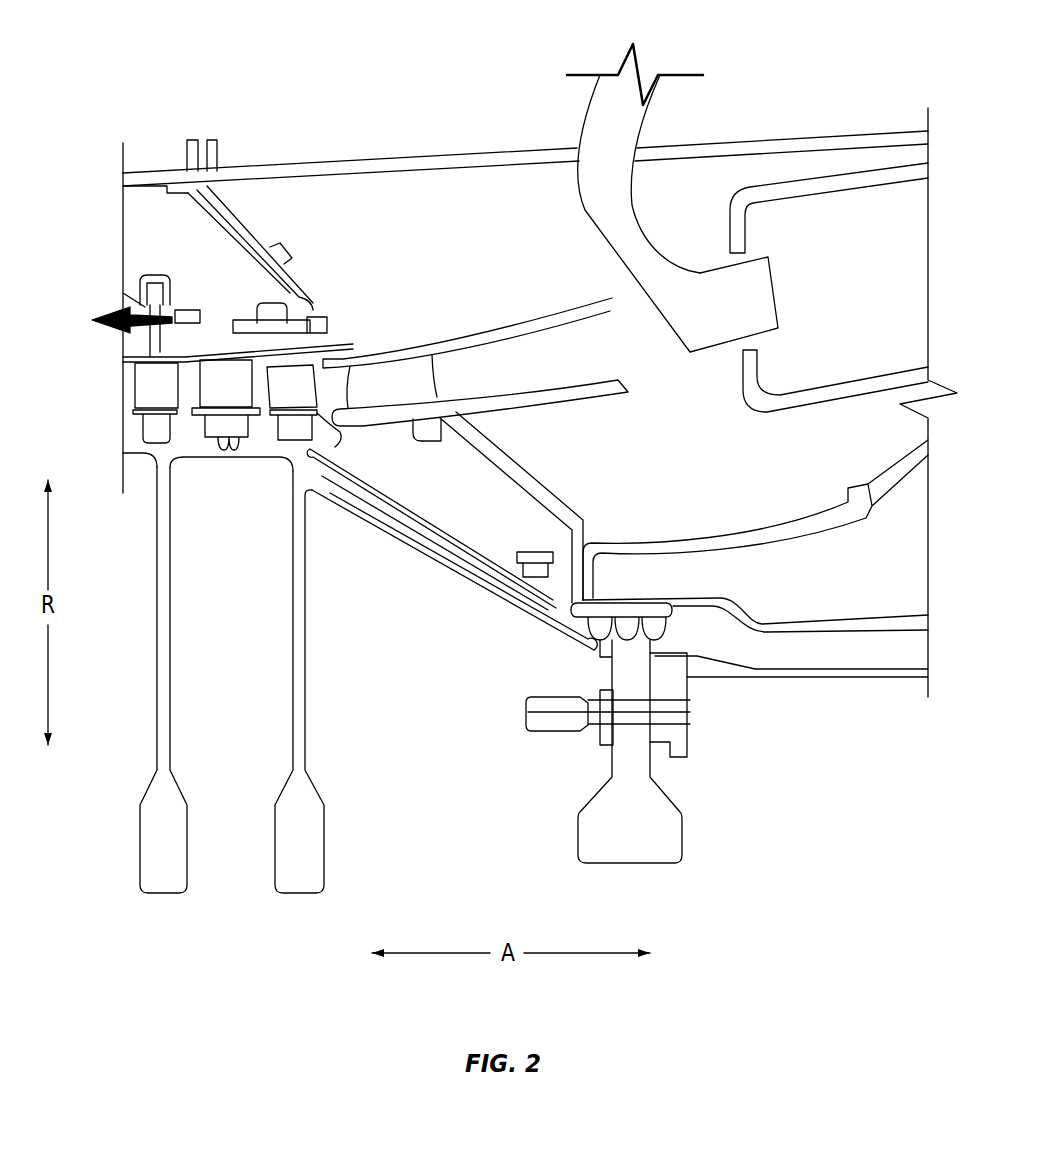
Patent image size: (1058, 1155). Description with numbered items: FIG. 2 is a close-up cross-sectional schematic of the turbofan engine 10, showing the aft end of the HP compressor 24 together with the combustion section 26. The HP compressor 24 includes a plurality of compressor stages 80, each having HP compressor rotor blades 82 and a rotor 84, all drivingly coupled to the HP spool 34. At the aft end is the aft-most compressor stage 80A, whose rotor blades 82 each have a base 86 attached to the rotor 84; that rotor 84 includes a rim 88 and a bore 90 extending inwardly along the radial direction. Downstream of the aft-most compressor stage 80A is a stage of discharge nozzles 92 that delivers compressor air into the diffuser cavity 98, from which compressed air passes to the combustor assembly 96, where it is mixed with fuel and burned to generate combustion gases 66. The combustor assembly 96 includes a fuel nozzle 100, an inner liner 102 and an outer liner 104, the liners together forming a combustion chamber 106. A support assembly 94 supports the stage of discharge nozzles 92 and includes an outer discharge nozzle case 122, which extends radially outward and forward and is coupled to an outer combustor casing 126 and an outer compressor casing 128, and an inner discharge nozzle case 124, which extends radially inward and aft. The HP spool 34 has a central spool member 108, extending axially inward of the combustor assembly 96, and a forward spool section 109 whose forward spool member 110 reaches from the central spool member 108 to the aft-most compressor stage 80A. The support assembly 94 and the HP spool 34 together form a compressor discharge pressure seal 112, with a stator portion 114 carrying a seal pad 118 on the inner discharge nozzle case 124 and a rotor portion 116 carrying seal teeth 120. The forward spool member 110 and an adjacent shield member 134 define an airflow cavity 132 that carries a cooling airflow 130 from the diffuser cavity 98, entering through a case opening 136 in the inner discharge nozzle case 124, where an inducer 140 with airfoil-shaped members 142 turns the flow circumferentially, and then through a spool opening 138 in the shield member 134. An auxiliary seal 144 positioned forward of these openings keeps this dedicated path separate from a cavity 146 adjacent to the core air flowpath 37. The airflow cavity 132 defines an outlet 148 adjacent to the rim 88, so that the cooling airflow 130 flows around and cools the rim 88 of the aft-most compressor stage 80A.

The turbofan engine 10 is at (781, 68).
The HP compressor 24 is at (157, 222).
The combustion section 26 is at (735, 122).
The HP spool 34 is at (793, 694).
The core air flowpath 37 is at (226, 386).
The combustion gases 66 is at (921, 278).
The compressor stages 80 is at (147, 386).
The aft-most compressor stage 80A is at (300, 376).
The HP compressor rotor blades 82 is at (303, 387).
The rotor 84 is at (277, 540).
The base 86 is at (277, 420).
The rim 88 is at (292, 437).
The bore 90 is at (294, 594).
The stage of discharge nozzles 92 is at (414, 366).
The support assembly 94 is at (575, 459).
The combustor assembly 96 is at (784, 158).
The diffuser cavity 98 is at (670, 428).
The fuel nozzle 100 is at (757, 296).
The inner liner 102 is at (858, 405).
The outer liner 104 is at (865, 163).
The combustion chamber 106 is at (913, 252).
The central spool member 108 is at (868, 680).
The forward spool section 109 is at (468, 676).
The forward spool member 110 is at (427, 571).
The compressor discharge pressure seal 112 is at (704, 631).
The stator portion 114 is at (667, 597).
The rotor portion 116 is at (663, 668).
The seal pad 118 is at (608, 614).
The seal teeth 120 is at (566, 609).
The outer discharge nozzle case 122 is at (285, 253).
The inner discharge nozzle case 124 is at (498, 465).
The outer combustor casing 126 is at (407, 158).
The outer compressor casing 128 is at (138, 175).
The cooling airflow 130 is at (385, 518).
The airflow cavity 132 is at (456, 566).
The shield member 134 is at (427, 553).
The case opening 136 is at (574, 518).
The spool opening 138 is at (587, 634).
The inducer 140 is at (591, 543).
The airfoil-shaped members 142 is at (567, 556).
The auxiliary seal 144 is at (455, 580).
The cavity 146 is at (423, 493).
The outlet 148 is at (329, 450).